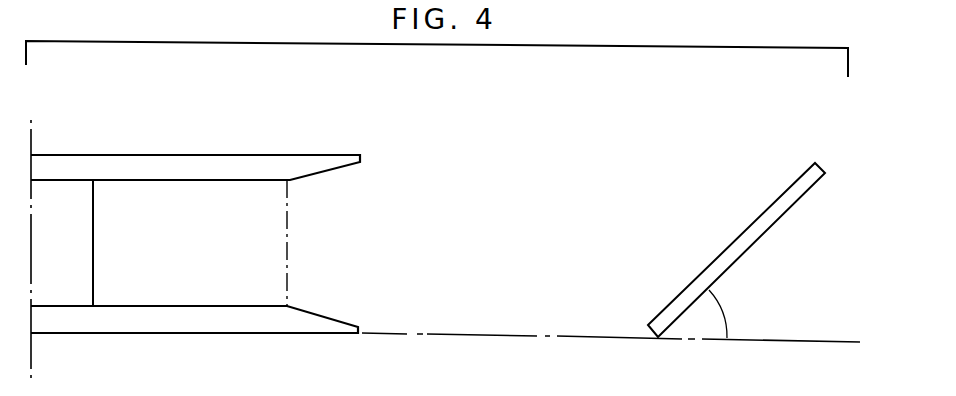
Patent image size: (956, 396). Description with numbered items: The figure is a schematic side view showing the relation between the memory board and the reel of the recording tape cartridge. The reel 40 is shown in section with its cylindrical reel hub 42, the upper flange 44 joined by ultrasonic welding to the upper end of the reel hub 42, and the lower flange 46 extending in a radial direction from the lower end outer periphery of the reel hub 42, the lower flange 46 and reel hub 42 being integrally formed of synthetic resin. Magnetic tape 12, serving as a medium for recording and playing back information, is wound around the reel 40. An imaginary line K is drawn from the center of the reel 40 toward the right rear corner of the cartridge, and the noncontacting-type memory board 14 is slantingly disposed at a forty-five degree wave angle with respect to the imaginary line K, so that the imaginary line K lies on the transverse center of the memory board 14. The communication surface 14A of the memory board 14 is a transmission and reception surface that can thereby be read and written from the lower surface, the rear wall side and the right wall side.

The reel 40 is at (203, 244).
The reel hub 42 is at (75, 200).
The upper flange 44 is at (232, 170).
The lower flange 46 is at (214, 325).
The magnetic tape 12 is at (287, 248).
The memory board 14 is at (755, 220).
The communication surface 14A is at (753, 248).
The imaginary line K is at (460, 336).